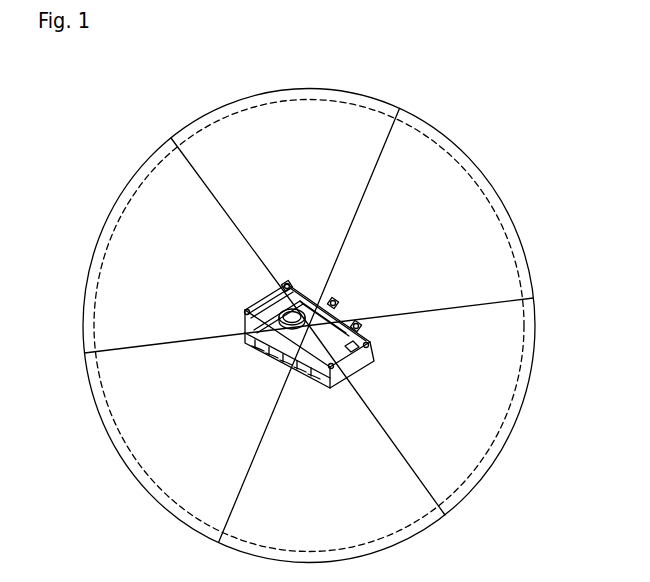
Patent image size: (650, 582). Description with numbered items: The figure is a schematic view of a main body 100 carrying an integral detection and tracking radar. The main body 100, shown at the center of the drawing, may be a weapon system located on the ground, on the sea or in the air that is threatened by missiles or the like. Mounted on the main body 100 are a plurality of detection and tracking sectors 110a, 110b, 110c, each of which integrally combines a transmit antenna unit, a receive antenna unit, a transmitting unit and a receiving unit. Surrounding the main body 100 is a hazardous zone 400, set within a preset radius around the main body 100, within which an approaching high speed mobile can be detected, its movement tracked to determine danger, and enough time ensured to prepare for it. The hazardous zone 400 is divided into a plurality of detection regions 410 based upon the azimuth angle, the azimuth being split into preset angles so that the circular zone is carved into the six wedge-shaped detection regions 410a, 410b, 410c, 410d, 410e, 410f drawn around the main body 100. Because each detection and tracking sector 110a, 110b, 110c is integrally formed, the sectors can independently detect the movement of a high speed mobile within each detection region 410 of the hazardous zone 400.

The main body 100 is at (243, 358).
The detection and tracking sector 110a is at (359, 327).
The detection and tracking sector 110b is at (336, 301).
The detection and tracking sector 110c is at (287, 284).
The hazardous zone 400 is at (508, 142).
The detection regions 410 is at (123, 445).
The detection region 410a is at (467, 412).
The detection region 410b is at (447, 232).
The detection region 410c is at (307, 186).
The detection region 410d is at (180, 262).
The detection region 410e is at (207, 440).
The detection region 410f is at (324, 486).